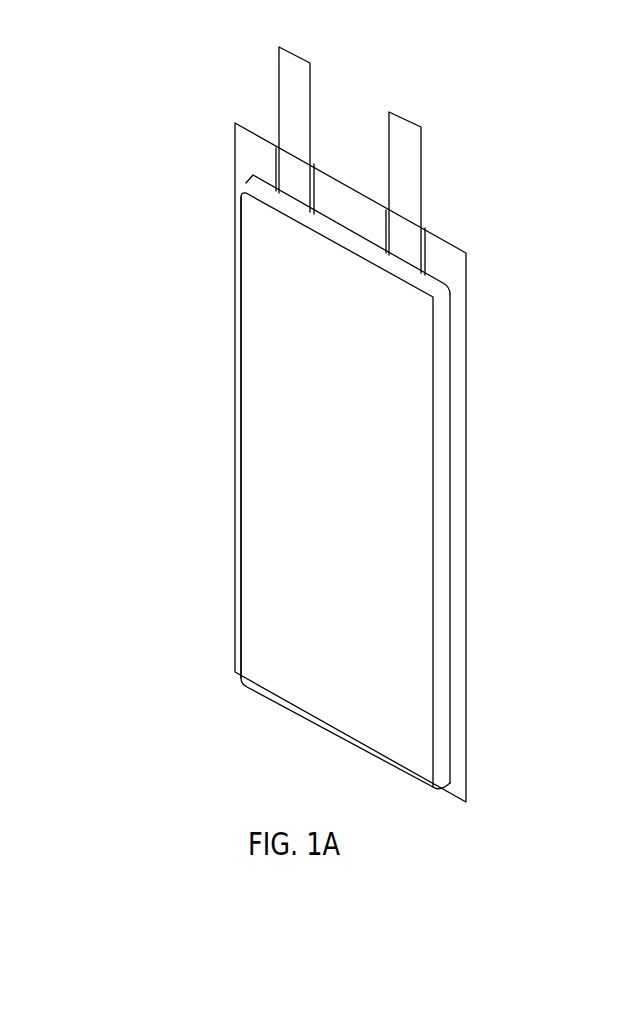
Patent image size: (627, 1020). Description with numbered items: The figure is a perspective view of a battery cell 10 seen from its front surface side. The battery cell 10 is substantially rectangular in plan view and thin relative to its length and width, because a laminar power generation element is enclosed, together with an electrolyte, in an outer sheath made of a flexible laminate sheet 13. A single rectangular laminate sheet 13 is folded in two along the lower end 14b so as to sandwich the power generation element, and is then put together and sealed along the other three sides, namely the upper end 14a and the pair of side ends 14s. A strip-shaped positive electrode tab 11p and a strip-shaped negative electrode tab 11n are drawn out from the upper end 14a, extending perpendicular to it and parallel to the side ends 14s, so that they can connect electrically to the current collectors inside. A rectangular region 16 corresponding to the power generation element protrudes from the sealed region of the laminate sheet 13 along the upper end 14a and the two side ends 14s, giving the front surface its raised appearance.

The battery cell 10 is at (208, 115).
The positive electrode tab 11p is at (284, 79).
The negative electrode tab 11n is at (405, 143).
The laminate sheet 13 is at (447, 268).
The upper end 14a is at (347, 185).
The lower end 14b is at (445, 785).
The side ends 14s is at (236, 455).
The rectangular region 16 is at (282, 348).